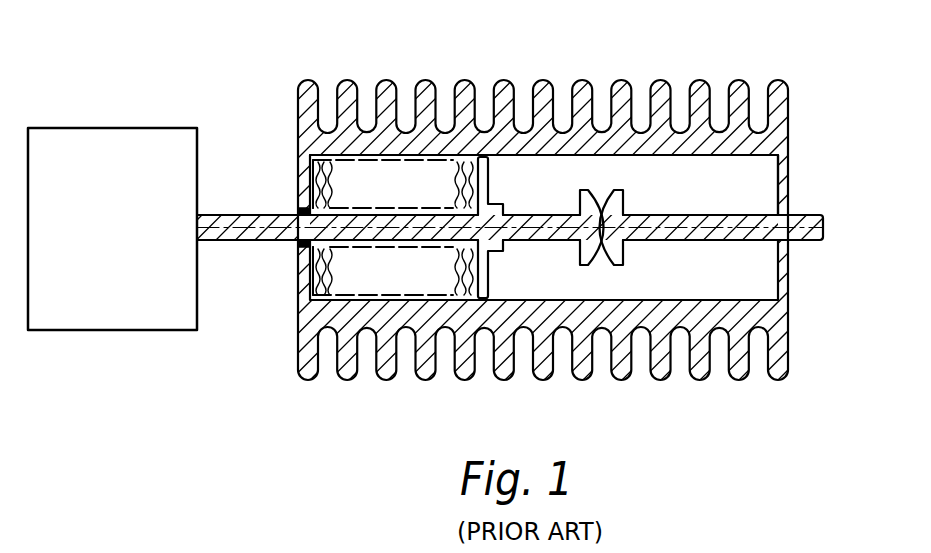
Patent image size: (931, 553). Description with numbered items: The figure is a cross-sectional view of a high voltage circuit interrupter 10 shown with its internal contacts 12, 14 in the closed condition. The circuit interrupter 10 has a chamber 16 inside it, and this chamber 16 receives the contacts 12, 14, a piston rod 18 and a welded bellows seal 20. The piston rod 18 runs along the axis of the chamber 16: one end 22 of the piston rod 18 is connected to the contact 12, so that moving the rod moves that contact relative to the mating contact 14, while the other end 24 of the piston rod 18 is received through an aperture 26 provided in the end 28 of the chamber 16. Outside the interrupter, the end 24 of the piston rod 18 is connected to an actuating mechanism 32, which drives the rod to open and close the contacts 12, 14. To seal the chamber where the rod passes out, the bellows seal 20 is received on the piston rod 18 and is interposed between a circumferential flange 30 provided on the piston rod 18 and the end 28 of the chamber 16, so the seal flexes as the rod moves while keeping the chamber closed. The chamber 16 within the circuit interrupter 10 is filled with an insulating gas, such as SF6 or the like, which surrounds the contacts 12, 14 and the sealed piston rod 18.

The high voltage circuit interrupter 10 is at (797, 106).
The contact 12 is at (585, 204).
The contact 14 is at (618, 208).
The chamber 16 is at (718, 157).
The piston rod 18 is at (250, 223).
The welded bellows seal 20 is at (430, 298).
The end of piston rod 22 is at (565, 238).
The end of piston rod 24 is at (215, 222).
The aperture 26 is at (298, 245).
The end of chamber 28 is at (313, 182).
The circumferential flange 30 is at (489, 186).
The actuating mechanism 32 is at (99, 236).